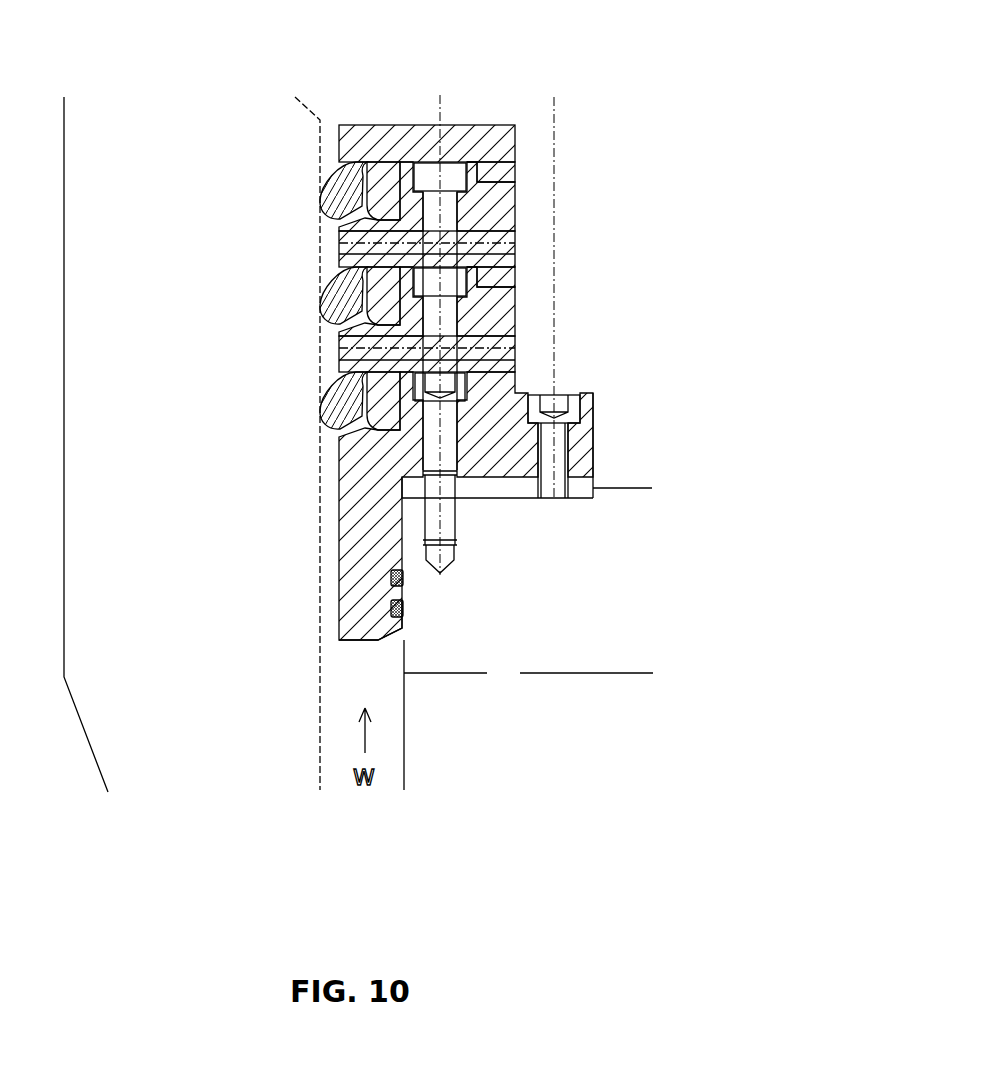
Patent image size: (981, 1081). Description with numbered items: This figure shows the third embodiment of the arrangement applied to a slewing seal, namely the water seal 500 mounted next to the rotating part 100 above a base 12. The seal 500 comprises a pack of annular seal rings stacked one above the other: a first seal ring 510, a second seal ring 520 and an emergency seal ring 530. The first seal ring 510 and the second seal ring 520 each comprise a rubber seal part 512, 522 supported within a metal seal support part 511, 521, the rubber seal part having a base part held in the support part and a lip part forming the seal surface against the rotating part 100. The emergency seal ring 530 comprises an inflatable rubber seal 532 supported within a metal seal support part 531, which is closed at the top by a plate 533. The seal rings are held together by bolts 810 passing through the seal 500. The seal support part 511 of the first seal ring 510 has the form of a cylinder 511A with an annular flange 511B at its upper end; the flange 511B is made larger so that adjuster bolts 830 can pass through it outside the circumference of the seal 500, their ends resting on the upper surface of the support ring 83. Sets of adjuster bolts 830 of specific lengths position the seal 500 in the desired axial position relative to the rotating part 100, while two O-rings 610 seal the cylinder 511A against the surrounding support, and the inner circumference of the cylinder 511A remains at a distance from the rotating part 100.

The rotating part 100 is at (138, 156).
The seal 500 is at (428, 341).
The bolts 810 is at (434, 128).
The adjuster bolts 830 is at (557, 457).
The emergency seal ring 530 is at (476, 192).
The upper plate of module 530 533 is at (516, 147).
The seal support part 531 is at (516, 203).
The inflatable rubber seal 532 is at (345, 197).
The second seal ring 520 is at (477, 296).
The seal support part 521 is at (516, 308).
The rubber seal part 522 is at (345, 302).
The first seal ring 510 is at (370, 501).
The seal support part 511 is at (412, 519).
The cylinder 511A is at (342, 626).
The annular flange 511B is at (505, 463).
The rubber seal part 512 is at (345, 408).
The O-rings 610 is at (361, 604).
The support ring 83 is at (603, 584).
The base 12 is at (603, 731).